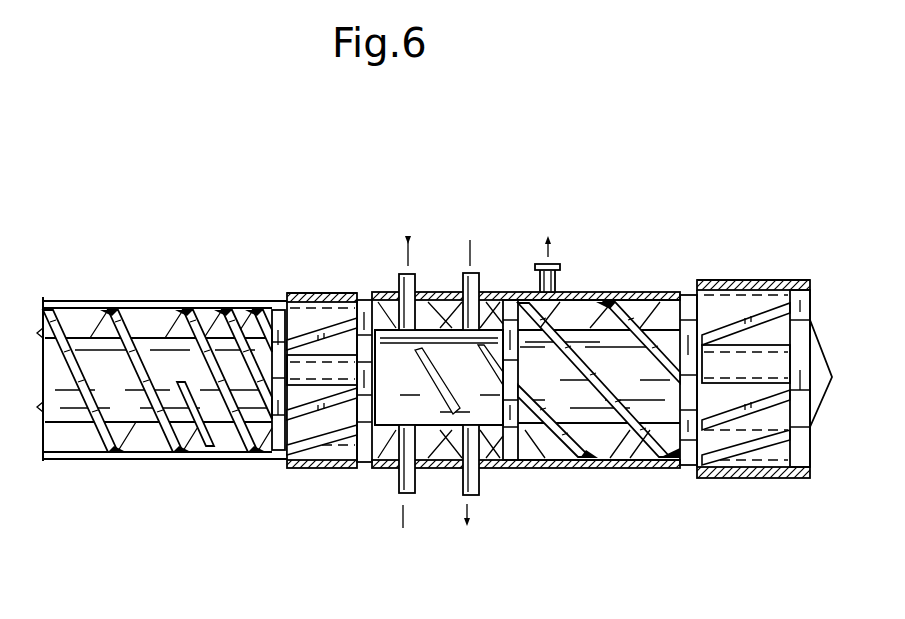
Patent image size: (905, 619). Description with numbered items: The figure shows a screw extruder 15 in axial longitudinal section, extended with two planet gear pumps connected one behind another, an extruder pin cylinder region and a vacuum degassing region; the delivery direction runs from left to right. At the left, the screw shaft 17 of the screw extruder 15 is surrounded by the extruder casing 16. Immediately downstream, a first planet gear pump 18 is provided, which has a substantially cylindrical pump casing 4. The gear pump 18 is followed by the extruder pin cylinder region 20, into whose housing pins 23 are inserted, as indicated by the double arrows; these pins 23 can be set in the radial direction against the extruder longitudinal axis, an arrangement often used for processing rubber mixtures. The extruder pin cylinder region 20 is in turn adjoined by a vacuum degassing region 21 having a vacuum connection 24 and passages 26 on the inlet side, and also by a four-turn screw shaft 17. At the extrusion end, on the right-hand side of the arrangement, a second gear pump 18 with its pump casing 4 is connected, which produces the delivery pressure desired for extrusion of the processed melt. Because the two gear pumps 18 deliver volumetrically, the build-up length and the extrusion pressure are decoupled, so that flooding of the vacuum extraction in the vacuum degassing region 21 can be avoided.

The pump casing 4 is at (322, 293).
The screw extruder 15 is at (153, 510).
The extruder casing 16 is at (143, 301).
The screw shaft 17 is at (605, 470).
The planet gear pump 18 is at (310, 508).
The extruder pin cylinder region 20 is at (428, 546).
The vacuum degassing region 21 is at (557, 531).
The pins 23 is at (416, 271).
The vacuum connection 24 is at (561, 270).
The passages 26 is at (510, 470).